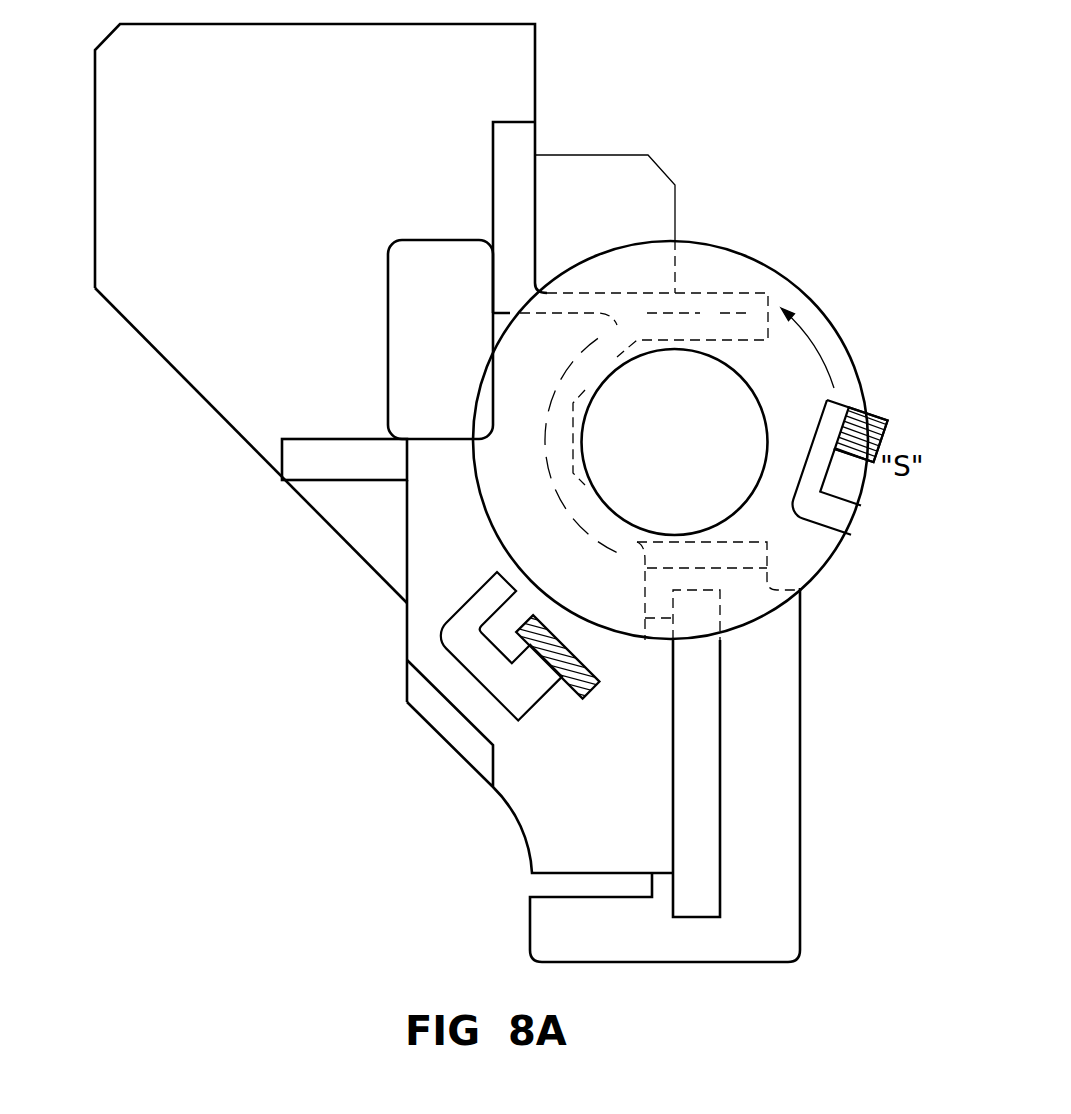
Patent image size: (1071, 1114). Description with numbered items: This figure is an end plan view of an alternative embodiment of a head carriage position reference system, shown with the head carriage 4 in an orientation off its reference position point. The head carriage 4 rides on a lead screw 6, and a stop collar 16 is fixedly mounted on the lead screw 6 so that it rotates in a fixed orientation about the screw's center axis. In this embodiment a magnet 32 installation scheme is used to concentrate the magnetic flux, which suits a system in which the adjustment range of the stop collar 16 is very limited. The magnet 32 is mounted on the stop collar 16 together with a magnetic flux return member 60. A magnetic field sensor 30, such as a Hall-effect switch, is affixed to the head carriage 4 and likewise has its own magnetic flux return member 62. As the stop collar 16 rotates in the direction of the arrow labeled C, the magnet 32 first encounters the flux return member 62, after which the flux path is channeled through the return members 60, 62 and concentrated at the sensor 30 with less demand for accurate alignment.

The head carriage 4 is at (196, 116).
The lead screw 6 is at (683, 473).
The stop collar 16 is at (729, 246).
The magnetic field sensor 30 is at (584, 698).
The magnet 32 is at (871, 413).
The magnetic flux return member 60 is at (833, 515).
The magnetic flux return member 62 is at (447, 634).